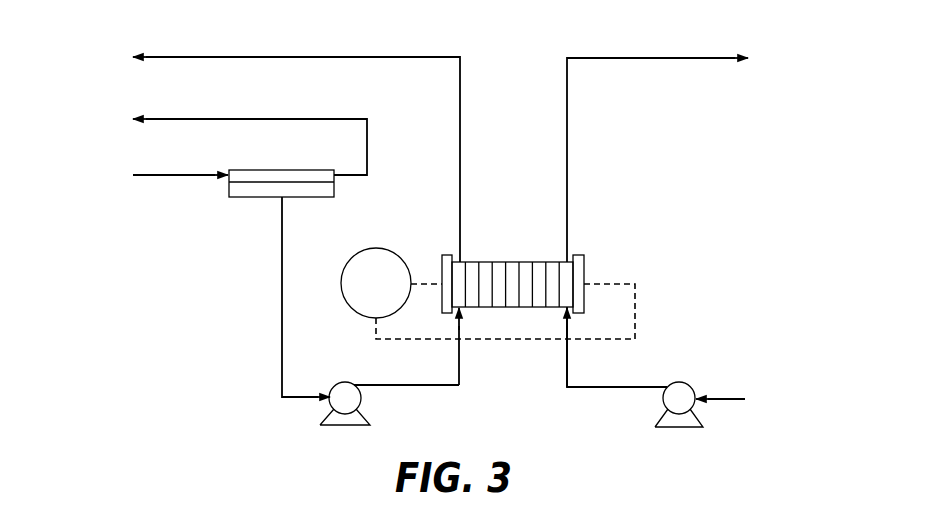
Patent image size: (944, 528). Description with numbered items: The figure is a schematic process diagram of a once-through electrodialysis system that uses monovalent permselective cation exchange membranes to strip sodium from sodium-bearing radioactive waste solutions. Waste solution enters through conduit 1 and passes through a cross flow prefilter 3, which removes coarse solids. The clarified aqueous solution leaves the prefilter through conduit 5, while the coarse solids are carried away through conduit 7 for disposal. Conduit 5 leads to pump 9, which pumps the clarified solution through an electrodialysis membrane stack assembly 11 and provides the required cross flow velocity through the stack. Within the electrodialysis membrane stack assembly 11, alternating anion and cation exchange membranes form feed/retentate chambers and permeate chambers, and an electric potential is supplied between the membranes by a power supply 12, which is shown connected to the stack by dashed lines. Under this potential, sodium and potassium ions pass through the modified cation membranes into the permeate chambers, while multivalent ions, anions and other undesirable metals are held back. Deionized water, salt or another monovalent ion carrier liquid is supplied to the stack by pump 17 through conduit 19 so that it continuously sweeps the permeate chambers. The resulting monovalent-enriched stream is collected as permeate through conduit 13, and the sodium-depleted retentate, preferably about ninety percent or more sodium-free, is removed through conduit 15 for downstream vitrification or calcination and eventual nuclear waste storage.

The conduit 1 is at (180, 174).
The cross flow prefilter 3 is at (272, 169).
The conduit 5 is at (281, 270).
The conduit 7 is at (283, 119).
The pump 9 is at (343, 382).
The electrodialysis membrane stack assembly 11 is at (538, 250).
The power supply 12 is at (377, 248).
The conduit 13 is at (568, 166).
The conduit 15 is at (365, 57).
The pump 17 is at (683, 382).
The conduit 19 is at (597, 386).